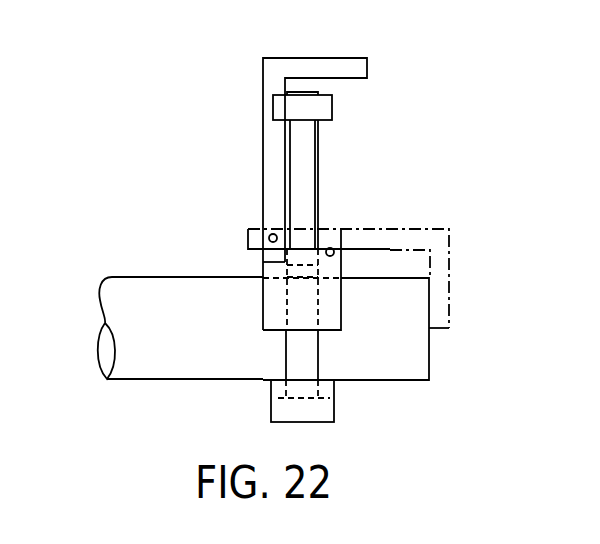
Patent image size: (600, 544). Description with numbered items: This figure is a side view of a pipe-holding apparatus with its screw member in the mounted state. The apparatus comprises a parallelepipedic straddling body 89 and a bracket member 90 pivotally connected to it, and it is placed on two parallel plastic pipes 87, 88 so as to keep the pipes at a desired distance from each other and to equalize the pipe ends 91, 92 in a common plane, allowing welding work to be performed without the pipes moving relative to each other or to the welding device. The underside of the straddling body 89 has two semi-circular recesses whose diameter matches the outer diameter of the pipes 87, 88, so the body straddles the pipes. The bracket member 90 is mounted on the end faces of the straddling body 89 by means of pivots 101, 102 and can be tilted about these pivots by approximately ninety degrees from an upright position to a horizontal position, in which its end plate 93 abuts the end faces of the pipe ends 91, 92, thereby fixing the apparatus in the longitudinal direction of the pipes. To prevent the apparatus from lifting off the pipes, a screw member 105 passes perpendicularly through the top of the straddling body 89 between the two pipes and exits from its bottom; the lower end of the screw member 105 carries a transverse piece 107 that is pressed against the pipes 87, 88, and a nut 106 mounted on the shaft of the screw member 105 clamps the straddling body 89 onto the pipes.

The plastic pipe 87 is at (175, 355).
The plastic pipe 88 is at (133, 360).
The straddling body 89 is at (256, 271).
The bracket member 90 is at (250, 112).
The pipe end 91 is at (397, 329).
The pipe end 92 is at (430, 354).
The end plate 93 is at (330, 63).
The pivot 101 is at (244, 203).
The pivot 102 is at (270, 228).
The screw member 105 is at (310, 190).
The nut 106 is at (327, 110).
The transverse piece 107 is at (267, 392).